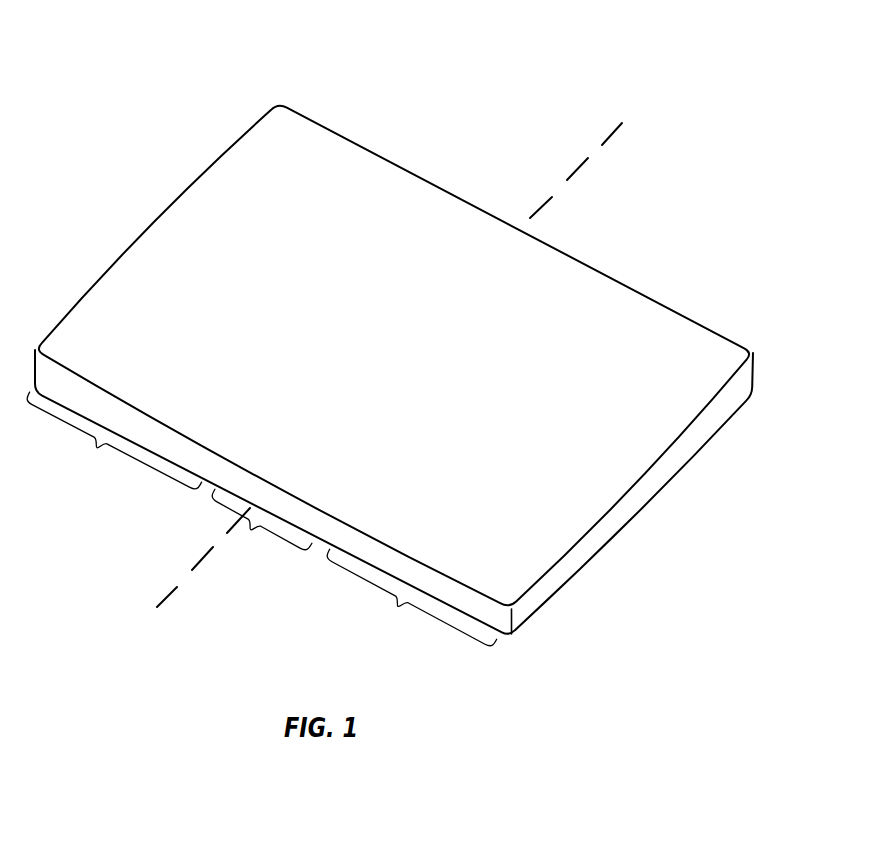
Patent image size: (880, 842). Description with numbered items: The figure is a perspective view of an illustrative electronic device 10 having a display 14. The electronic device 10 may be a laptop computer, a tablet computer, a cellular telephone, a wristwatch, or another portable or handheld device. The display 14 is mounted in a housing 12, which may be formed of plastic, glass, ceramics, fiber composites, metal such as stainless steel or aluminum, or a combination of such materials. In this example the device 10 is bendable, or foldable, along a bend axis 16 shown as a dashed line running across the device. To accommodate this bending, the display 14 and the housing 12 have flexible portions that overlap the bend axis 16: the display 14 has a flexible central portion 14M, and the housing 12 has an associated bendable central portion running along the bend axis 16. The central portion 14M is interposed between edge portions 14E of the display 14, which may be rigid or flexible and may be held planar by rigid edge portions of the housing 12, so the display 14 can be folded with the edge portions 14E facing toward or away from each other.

The electronic device 10 is at (467, 73).
The housing 12 is at (717, 433).
The display 14 is at (640, 327).
The edge portions of display 14E is at (97, 448).
The flexible central portion of display 14M is at (251, 530).
The bend axis 16 is at (167, 593).